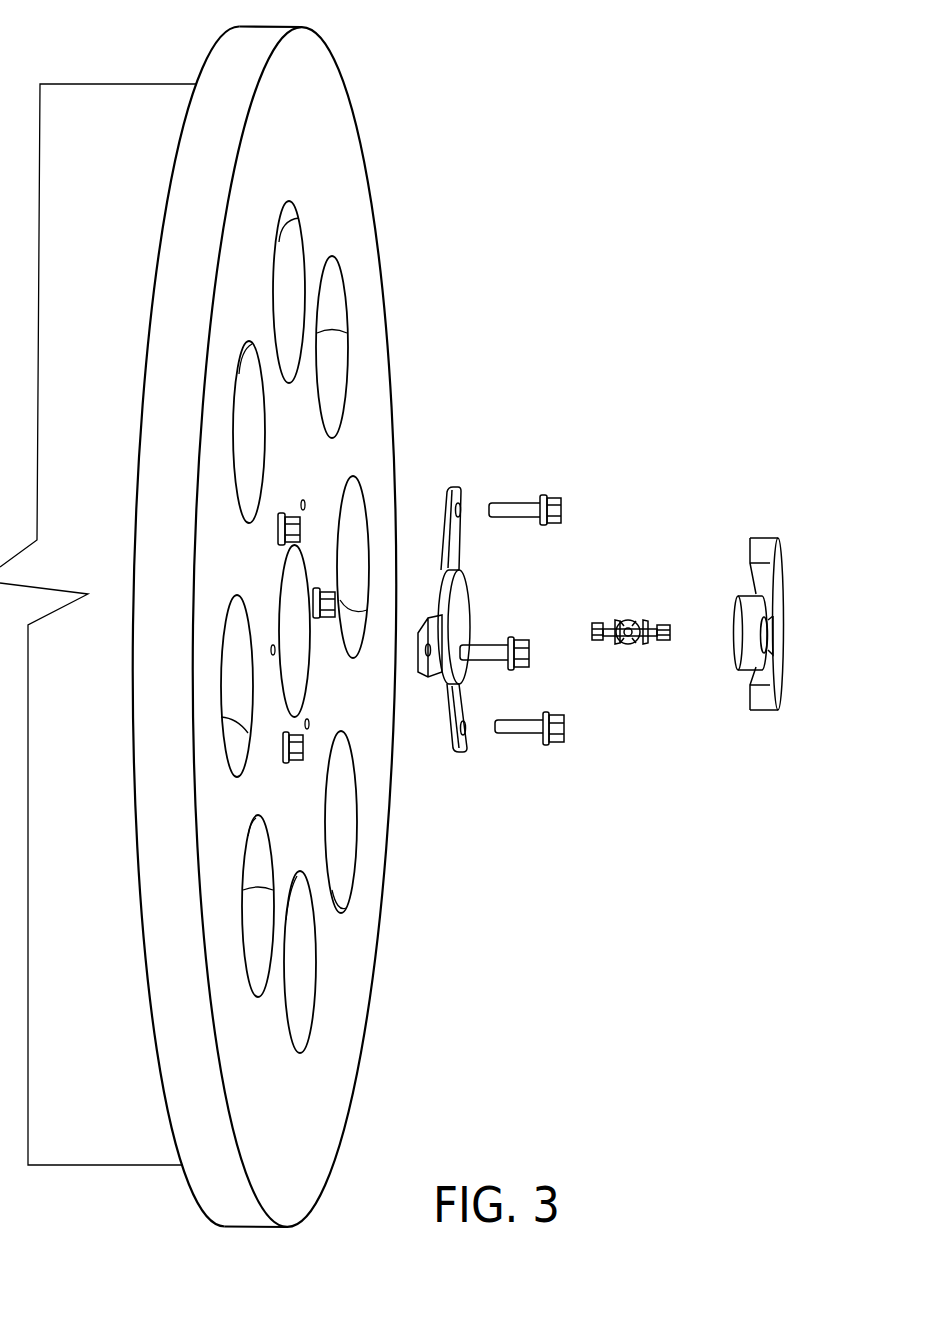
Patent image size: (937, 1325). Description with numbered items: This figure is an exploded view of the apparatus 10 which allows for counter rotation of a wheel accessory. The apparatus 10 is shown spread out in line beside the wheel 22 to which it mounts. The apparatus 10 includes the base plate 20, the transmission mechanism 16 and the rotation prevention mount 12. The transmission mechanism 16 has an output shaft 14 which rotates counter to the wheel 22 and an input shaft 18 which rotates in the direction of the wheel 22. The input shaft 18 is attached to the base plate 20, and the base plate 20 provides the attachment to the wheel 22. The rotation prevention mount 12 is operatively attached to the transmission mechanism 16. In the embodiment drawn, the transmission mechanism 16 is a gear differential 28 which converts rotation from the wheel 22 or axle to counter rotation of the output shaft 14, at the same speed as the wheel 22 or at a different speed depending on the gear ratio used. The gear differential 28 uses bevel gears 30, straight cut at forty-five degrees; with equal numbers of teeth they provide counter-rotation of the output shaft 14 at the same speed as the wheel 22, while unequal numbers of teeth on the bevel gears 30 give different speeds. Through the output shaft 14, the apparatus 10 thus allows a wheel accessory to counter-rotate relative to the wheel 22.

The apparatus 10 is at (553, 440).
The rotation prevention mount 12 is at (785, 597).
The output shaft 14 is at (672, 632).
The transmission mechanism 16 is at (627, 648).
The input shaft 18 is at (578, 630).
The base plate 20 is at (462, 757).
The wheel 22 is at (230, 97).
The gear differential 28 is at (647, 590).
The bevel gears 30 is at (612, 648).